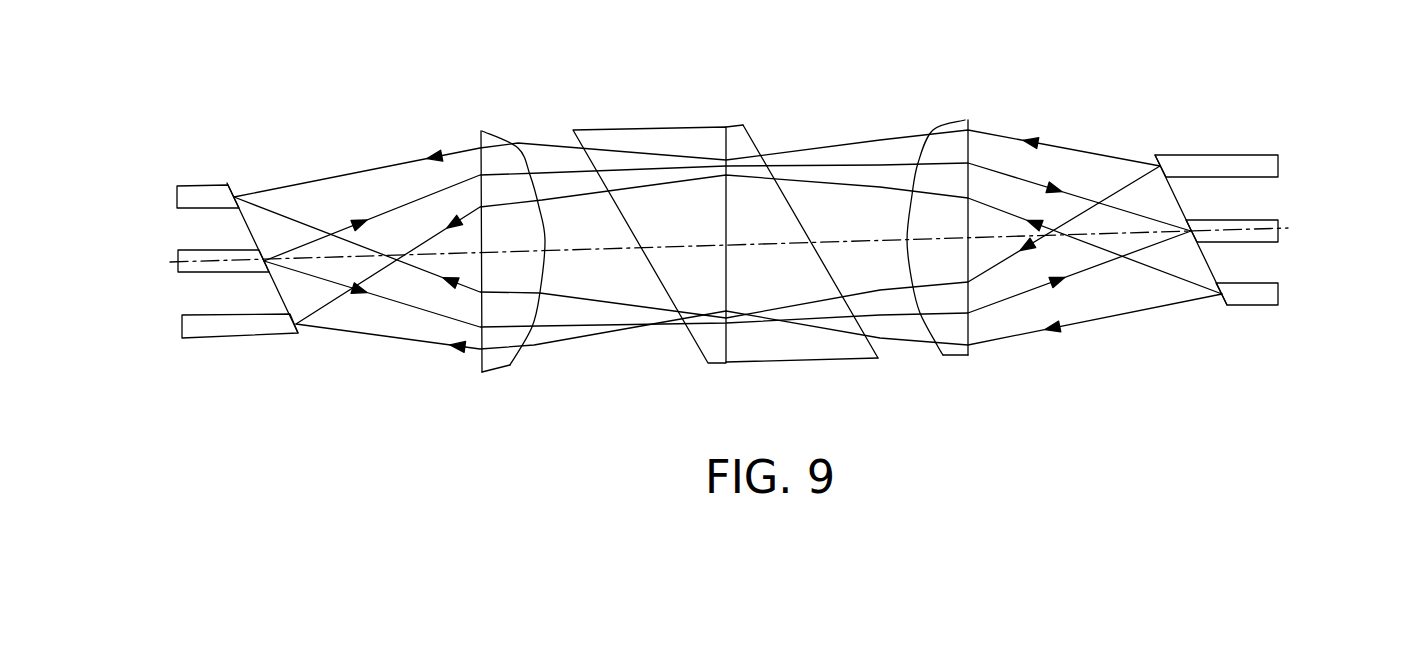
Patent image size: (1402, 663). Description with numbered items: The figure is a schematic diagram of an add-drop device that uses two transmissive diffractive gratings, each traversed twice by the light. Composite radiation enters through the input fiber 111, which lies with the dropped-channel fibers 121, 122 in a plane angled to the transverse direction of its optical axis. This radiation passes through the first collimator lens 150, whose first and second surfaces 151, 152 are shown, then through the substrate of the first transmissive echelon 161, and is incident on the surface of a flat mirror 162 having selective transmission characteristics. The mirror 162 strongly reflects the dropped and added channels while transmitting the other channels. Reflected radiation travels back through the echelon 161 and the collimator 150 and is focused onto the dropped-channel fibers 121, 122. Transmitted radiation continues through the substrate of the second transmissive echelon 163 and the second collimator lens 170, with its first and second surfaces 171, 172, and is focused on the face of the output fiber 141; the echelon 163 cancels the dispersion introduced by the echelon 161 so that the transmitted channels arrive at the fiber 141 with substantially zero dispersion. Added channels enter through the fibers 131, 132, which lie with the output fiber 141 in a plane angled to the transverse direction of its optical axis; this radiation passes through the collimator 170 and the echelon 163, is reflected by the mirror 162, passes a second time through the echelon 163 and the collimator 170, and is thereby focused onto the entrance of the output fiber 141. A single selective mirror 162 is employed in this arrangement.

The input fiber 111 is at (172, 257).
The dropped channel fiber 121 is at (173, 197).
The dropped channel fiber 122 is at (175, 325).
The added channel fiber 131 is at (1287, 160).
The output fiber 141 is at (1290, 221).
The added channel fiber 132 is at (1292, 292).
The first collimator lens 150 is at (497, 238).
The first surface of first collimator lens 151 is at (482, 353).
The second surface of first collimator lens 152 is at (523, 353).
The substrate of first transmissive echelon 161 is at (693, 352).
The selective mirror surface 162 is at (727, 347).
The substrate of second transmissive echelon 163 is at (757, 135).
The second collimator lens 170 is at (964, 236).
The first surface of second collimator lens 171 is at (943, 353).
The second surface of second collimator lens 172 is at (972, 330).